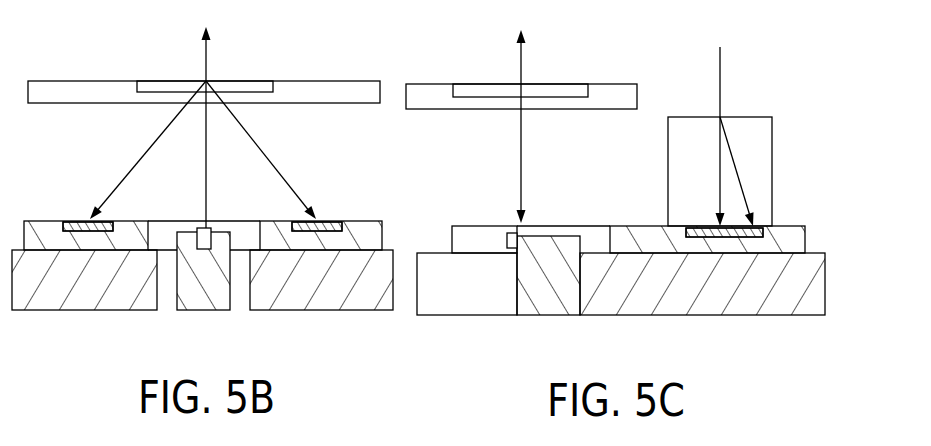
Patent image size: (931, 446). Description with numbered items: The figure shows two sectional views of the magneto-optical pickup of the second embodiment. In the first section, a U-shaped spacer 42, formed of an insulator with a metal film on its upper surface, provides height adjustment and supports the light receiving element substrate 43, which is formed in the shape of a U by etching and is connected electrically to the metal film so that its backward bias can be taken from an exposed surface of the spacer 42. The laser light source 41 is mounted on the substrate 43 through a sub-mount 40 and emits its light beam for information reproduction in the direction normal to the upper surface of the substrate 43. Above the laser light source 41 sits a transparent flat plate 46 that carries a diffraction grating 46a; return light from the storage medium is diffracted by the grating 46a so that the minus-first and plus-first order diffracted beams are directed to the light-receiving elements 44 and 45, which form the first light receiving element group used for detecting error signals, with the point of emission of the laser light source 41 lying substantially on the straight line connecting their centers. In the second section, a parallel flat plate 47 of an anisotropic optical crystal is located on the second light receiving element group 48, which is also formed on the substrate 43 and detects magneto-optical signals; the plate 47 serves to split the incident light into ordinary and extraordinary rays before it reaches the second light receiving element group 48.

In FIG. 5B, the sub-mount 40 is at (185, 299).
In FIG. 5C, the sub-mount 40 is at (568, 240).
In FIG. 5B, the laser light source 41 is at (204, 250).
In FIG. 5C, the laser light source 41 is at (507, 238).
In FIG. 5B, the spacer 42 is at (72, 298).
In FIG. 5B, the light receiving element substrate 43 is at (368, 221).
In FIG. 5B, the light-receiving element 44 is at (293, 222).
In FIG. 5B, the light-receiving element 45 is at (72, 222).
In FIG. 5B, the transparent flat plate 46 is at (366, 81).
In FIG. 5C, the transparent flat plate 46 is at (621, 84).
In FIG. 5B, the diffraction grating 46a is at (265, 81).
In FIG. 5C, the diffraction grating 46a is at (563, 84).
In FIG. 5C, the parallel flat plate 47 is at (668, 152).
In FIG. 5C, the second light receiving element group 48 is at (747, 238).